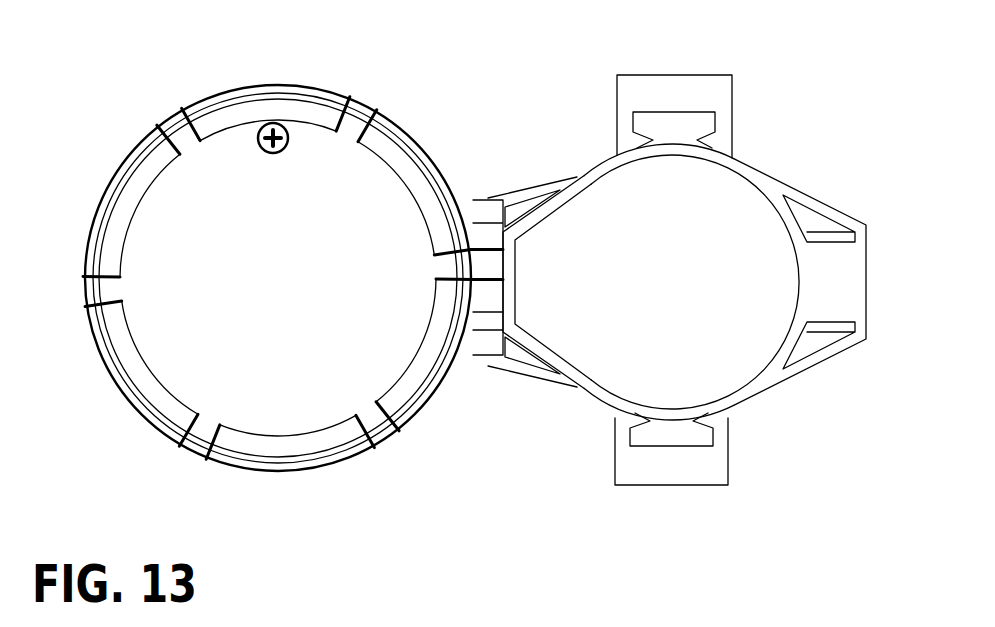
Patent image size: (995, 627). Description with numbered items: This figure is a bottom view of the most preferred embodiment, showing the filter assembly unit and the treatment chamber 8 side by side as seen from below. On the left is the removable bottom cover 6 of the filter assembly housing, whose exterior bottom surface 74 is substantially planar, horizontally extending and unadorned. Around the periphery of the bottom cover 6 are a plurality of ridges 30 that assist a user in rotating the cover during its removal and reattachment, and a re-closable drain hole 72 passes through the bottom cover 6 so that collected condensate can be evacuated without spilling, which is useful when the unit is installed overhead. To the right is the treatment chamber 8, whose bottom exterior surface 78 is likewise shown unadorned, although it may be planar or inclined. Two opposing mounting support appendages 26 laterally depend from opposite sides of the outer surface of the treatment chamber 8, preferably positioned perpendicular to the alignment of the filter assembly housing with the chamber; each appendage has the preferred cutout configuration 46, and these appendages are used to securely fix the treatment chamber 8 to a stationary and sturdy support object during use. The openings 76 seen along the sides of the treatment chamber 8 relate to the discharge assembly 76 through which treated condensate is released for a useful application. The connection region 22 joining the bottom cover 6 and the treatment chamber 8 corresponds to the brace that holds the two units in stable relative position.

The bottom cover 6 is at (254, 113).
The treatment chamber 8 is at (750, 178).
The hinge connection 22 is at (524, 205).
The mounting support appendages 26 is at (638, 100).
The ridges 30 is at (212, 438).
The cutout configuration 46 is at (678, 427).
The drain hole 72 is at (280, 133).
The bottom surface of bottom cover 74 is at (197, 240).
The discharge assembly 76 is at (843, 222).
The bottom exterior surface of treatment chamber 78 is at (728, 322).